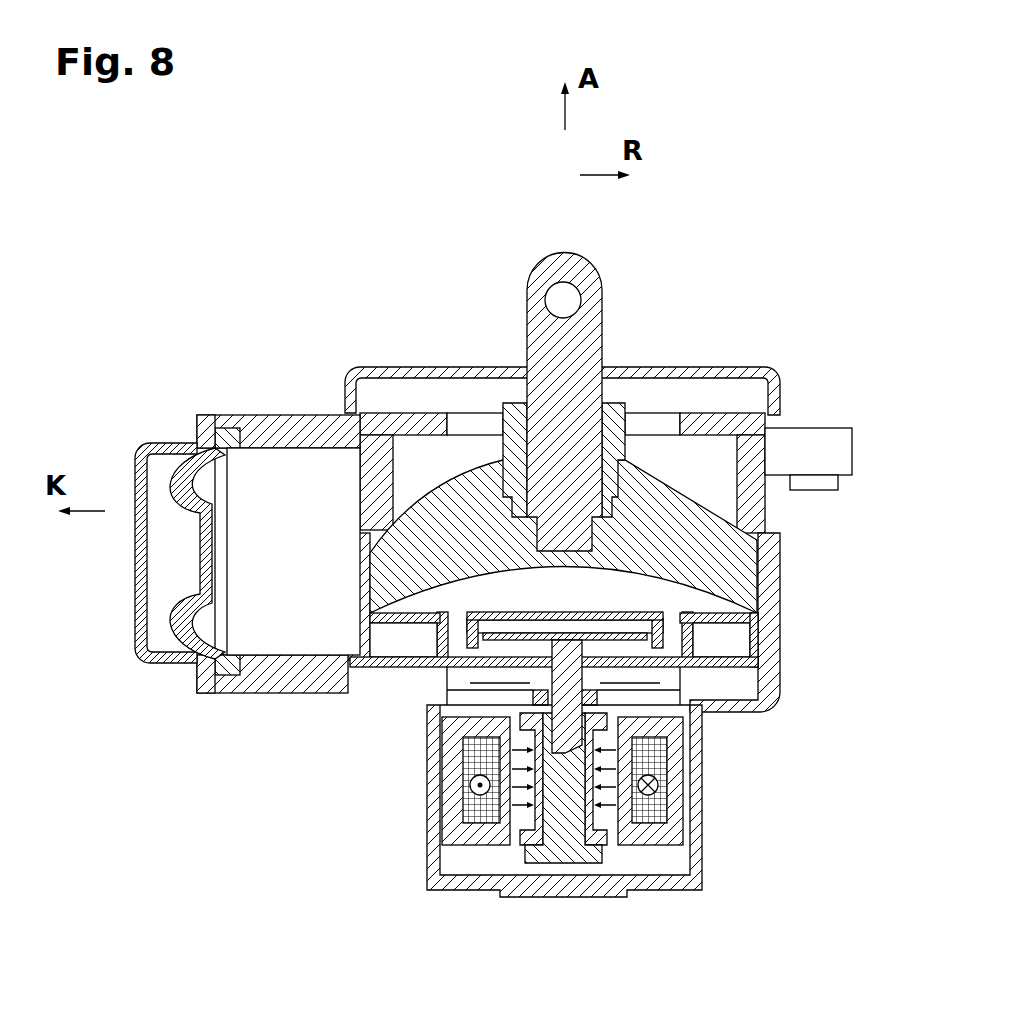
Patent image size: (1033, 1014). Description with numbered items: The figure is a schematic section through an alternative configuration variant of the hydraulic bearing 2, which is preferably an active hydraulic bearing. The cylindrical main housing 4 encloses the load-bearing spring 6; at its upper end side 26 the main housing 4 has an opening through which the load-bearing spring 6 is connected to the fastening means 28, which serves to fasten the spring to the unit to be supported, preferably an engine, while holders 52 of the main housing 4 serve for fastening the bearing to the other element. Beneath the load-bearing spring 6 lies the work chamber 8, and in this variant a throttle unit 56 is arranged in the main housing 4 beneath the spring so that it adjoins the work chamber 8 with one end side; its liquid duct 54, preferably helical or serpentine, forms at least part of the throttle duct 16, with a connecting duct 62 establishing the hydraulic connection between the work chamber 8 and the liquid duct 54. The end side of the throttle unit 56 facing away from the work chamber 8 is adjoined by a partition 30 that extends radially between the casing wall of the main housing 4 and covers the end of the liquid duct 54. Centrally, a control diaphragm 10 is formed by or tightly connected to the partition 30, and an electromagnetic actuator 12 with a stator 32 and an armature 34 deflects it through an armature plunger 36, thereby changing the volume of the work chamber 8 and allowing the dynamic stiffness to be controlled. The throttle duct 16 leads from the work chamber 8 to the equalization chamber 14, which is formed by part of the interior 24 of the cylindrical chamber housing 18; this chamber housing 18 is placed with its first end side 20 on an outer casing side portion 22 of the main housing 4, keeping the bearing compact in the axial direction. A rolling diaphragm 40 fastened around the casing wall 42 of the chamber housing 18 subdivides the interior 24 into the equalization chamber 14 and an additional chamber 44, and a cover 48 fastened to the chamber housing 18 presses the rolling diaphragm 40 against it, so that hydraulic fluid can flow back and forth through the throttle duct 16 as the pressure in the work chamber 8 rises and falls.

The hydraulic bearing 2 is at (842, 298).
The main housing 4 is at (772, 380).
The load-bearing spring 6 is at (745, 455).
The work chamber 8 is at (628, 598).
The control diaphragm 10 is at (746, 688).
The actuator 12 is at (708, 792).
The equalization chamber 14 is at (278, 460).
The throttle duct 16 is at (722, 638).
The cylindrical chamber housing 18 is at (305, 415).
The first end side 20 is at (338, 678).
The casing side portion 22 is at (338, 600).
The interior 24 is at (268, 640).
The upper end side 26 is at (360, 520).
The fastening means 28 is at (596, 286).
The partition 30 is at (762, 665).
The stator 32 is at (682, 805).
The armature 34 is at (592, 864).
The armature plunger 36 is at (523, 742).
The rolling diaphragm 40 is at (175, 655).
The casing wall 42 is at (197, 415).
The additional chamber 44 is at (160, 628).
The cover 48 is at (134, 592).
The holders 52 is at (818, 482).
The liquid duct 54 is at (396, 695).
The throttle unit 56 is at (762, 614).
The connecting duct 62 is at (370, 640).